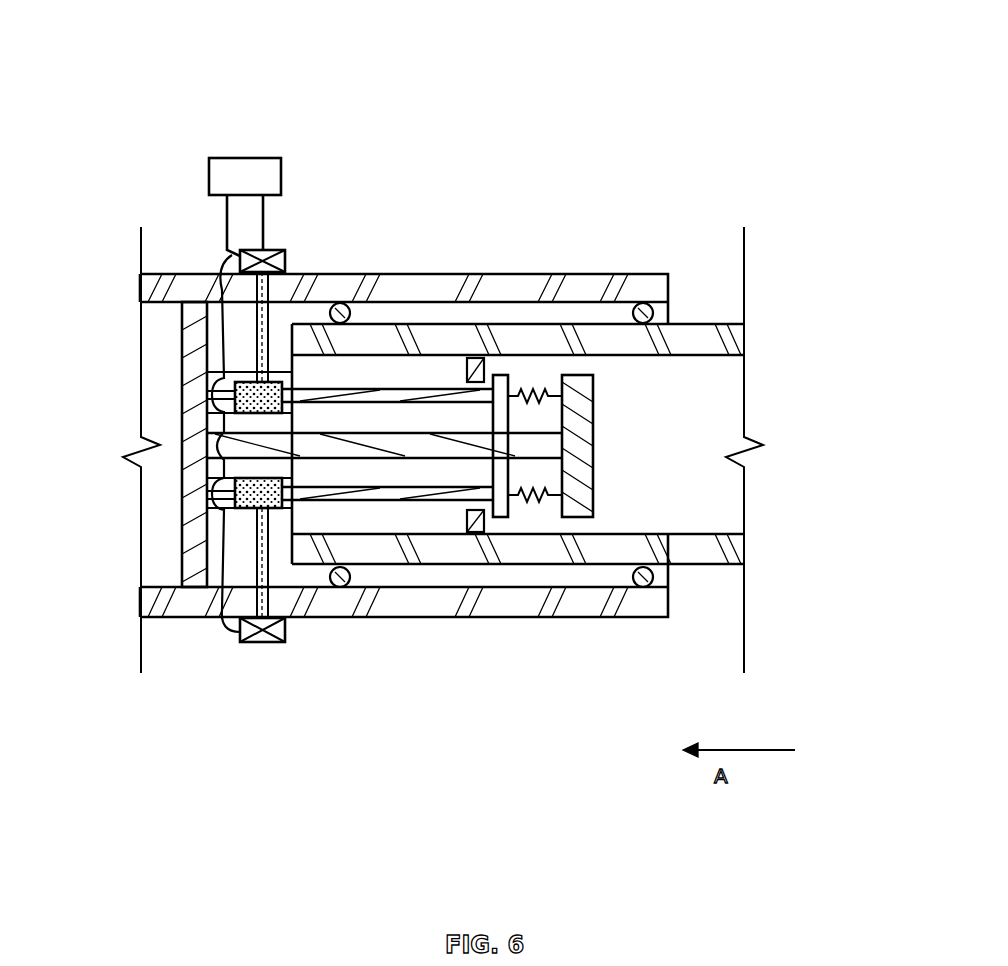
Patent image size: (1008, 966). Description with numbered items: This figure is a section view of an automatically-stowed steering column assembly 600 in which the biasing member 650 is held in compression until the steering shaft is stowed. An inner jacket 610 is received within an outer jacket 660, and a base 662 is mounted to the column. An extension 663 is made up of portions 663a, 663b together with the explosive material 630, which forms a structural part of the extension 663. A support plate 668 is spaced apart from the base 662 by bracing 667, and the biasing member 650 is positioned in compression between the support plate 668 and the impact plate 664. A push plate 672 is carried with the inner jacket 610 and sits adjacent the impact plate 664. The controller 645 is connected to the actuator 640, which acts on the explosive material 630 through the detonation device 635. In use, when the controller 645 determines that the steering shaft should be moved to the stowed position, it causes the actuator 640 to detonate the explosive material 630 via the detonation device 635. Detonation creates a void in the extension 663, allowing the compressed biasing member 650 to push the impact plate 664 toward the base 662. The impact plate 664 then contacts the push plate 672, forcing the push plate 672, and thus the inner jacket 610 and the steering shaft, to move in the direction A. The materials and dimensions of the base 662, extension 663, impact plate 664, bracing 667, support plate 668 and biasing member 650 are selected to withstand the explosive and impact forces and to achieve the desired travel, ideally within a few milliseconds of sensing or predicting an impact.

The automatically-stowed steering column assembly 600 is at (458, 373).
The inner jacket 610 is at (697, 322).
The explosive material 630 is at (273, 382).
The detonation device 635 is at (222, 343).
The actuator 640 is at (264, 250).
The controller 645 is at (240, 172).
The biasing member 650 is at (527, 388).
The outer jacket 660 is at (593, 287).
The base 662 is at (183, 545).
The extension 663 is at (422, 393).
The portion of the extension 663a is at (222, 398).
The portion of the extension 663b is at (367, 390).
The impact plate 664 is at (502, 373).
The bracing 667 is at (397, 448).
The support plate 668 is at (578, 408).
The push plate 672 is at (477, 360).